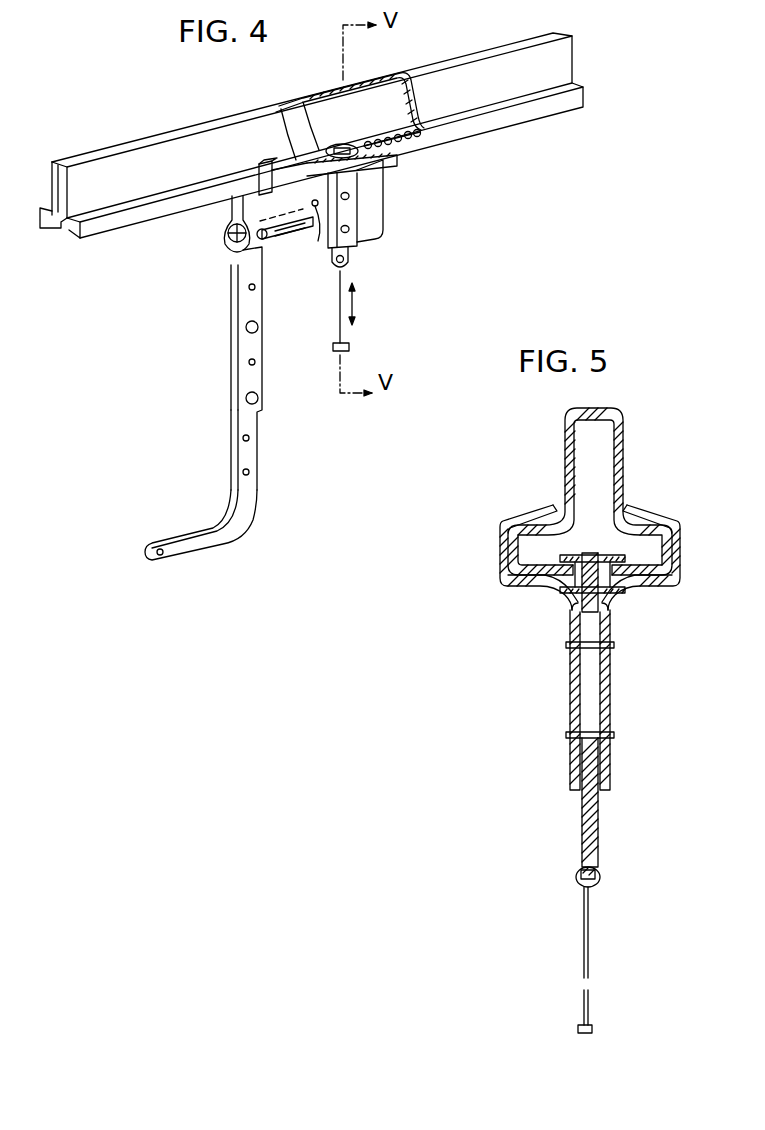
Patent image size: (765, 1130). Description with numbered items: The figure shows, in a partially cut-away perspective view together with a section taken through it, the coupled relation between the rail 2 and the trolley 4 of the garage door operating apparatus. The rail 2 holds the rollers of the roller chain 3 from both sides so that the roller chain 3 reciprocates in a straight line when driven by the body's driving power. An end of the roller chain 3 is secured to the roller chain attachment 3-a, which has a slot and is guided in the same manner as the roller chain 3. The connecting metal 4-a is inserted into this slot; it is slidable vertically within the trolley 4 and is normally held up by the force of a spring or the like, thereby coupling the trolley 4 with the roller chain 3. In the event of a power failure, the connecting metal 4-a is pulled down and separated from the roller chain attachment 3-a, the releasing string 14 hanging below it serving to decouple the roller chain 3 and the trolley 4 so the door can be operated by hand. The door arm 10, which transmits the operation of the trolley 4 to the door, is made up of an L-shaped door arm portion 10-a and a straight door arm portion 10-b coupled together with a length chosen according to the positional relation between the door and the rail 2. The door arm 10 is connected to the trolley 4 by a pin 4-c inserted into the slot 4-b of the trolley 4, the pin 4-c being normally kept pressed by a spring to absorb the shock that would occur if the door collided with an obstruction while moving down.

In FIG. 4, the rail 2 is at (167, 141).
In FIG. 5, the rail 2 is at (625, 424).
In FIG. 4, the roller chain 3 is at (413, 141).
In FIG. 5, the roller chain 3 is at (580, 578).
In FIG. 4, the roller chain attachment 3-a is at (290, 108).
In FIG. 5, the roller chain attachment 3-a is at (620, 598).
In FIG. 4, the trolley 4 is at (378, 217).
In FIG. 5, the trolley 4 is at (612, 632).
In FIG. 4, the connecting metal 4-a is at (350, 257).
In FIG. 5, the connecting metal 4-a is at (573, 604).
In FIG. 4, the slot 4-b is at (292, 240).
In FIG. 4, the pin 4-c is at (238, 256).
In FIG. 4, the door arm 10 is at (230, 408).
In FIG. 4, the L-shaped door arm portion 10-a is at (225, 547).
In FIG. 4, the straight door arm portion 10-b is at (237, 313).
In FIG. 5, the releasing string 14 is at (590, 929).